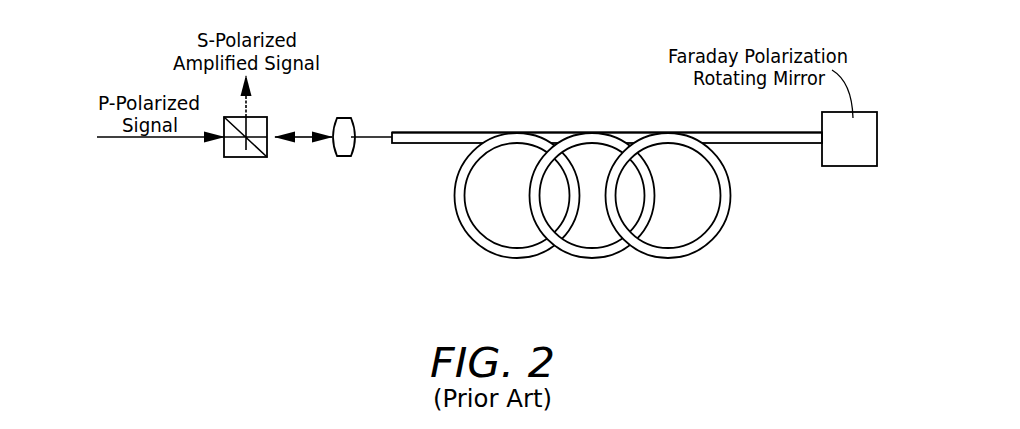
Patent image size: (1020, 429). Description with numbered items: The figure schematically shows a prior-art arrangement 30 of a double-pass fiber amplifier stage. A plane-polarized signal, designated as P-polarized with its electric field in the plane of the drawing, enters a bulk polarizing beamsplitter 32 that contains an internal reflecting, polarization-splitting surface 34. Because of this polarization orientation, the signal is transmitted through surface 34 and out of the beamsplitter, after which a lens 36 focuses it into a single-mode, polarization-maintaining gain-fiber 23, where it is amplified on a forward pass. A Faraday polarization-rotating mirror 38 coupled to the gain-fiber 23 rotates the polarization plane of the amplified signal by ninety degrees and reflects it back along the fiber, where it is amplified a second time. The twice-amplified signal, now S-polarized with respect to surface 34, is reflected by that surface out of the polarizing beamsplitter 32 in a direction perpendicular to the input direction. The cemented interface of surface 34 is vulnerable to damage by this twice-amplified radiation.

The prior-art arrangement 30 is at (337, 247).
The bulk polarizing beamsplitter 32 is at (243, 168).
The internal reflecting surface 34 is at (242, 157).
The lens 36 is at (346, 122).
The gain-fiber 23 is at (696, 264).
The Faraday polarization-rotating mirror 38 is at (843, 162).